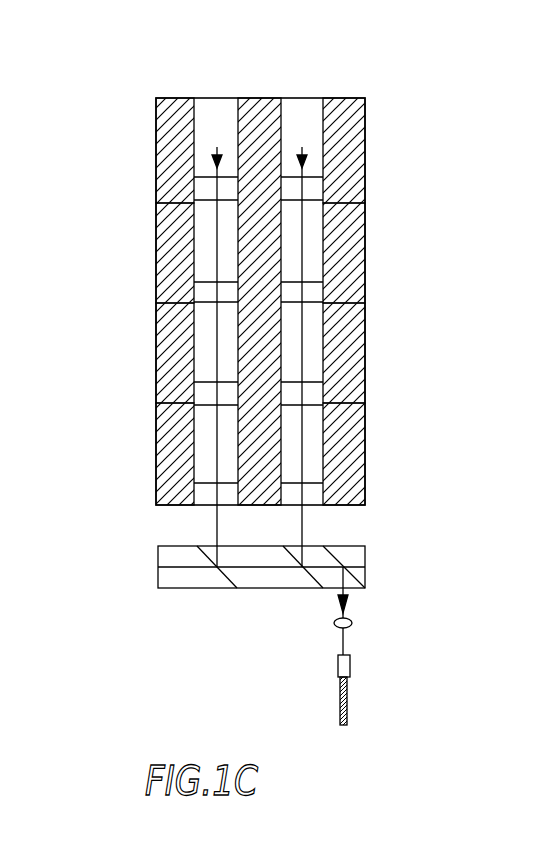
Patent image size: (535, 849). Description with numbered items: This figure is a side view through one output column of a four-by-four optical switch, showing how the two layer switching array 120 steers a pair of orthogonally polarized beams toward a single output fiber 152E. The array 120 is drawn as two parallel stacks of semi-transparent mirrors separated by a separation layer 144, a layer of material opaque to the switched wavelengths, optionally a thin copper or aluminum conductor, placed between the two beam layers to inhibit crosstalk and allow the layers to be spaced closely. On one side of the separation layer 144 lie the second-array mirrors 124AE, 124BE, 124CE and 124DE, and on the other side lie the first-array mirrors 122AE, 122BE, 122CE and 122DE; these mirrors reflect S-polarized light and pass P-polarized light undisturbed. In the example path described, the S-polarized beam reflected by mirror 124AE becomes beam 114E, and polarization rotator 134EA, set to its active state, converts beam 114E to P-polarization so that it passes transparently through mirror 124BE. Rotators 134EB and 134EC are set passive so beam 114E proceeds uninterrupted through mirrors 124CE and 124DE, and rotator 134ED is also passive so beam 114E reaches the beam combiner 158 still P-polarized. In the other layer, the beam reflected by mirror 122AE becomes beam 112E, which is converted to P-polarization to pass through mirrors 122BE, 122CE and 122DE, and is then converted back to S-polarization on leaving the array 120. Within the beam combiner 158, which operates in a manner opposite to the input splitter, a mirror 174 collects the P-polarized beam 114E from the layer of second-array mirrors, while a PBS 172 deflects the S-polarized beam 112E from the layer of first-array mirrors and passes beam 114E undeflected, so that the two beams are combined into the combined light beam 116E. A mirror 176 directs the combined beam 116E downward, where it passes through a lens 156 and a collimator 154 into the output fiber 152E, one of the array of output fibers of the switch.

The two layer switching array 120 is at (347, 88).
The separation layer 144 is at (255, 110).
The semi-transparent mirror 124AE is at (207, 137).
The semi-transparent mirror 124BE is at (207, 241).
The semi-transparent mirror 124CE is at (207, 351).
The semi-transparent mirror 124DE is at (207, 451).
The semi-transparent mirror 122AE is at (312, 135).
The semi-transparent mirror 122BE is at (312, 239).
The semi-transparent mirror 122CE is at (313, 349).
The semi-transparent mirror 122DE is at (313, 449).
The polarization rotator 134EA is at (200, 178).
The polarization rotator 134EB is at (200, 283).
The polarization rotator 134EC is at (200, 383).
The polarization rotator 134ED is at (200, 484).
The beam 114E is at (217, 520).
The beam 112E is at (305, 522).
The beam combiner 158 is at (157, 566).
The mirror 174 is at (216, 570).
The PBS 172 is at (302, 570).
The mirror 176 is at (345, 558).
The combined light beam 116E is at (352, 592).
The lens 156 is at (352, 623).
The collimator 154 is at (350, 665).
The output fiber 152E is at (347, 700).